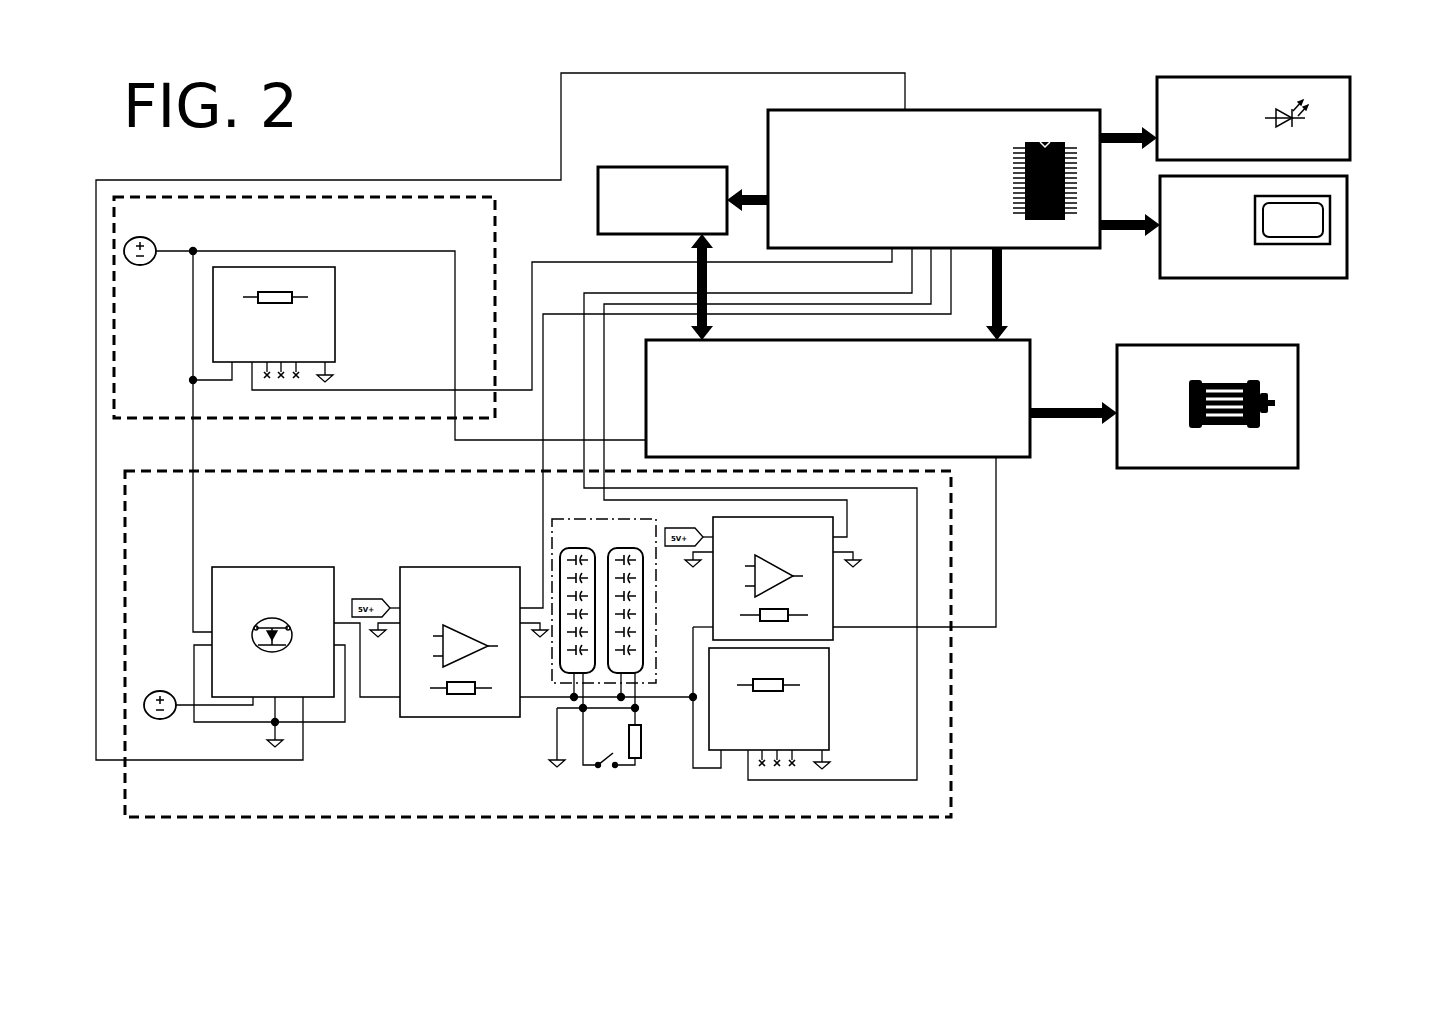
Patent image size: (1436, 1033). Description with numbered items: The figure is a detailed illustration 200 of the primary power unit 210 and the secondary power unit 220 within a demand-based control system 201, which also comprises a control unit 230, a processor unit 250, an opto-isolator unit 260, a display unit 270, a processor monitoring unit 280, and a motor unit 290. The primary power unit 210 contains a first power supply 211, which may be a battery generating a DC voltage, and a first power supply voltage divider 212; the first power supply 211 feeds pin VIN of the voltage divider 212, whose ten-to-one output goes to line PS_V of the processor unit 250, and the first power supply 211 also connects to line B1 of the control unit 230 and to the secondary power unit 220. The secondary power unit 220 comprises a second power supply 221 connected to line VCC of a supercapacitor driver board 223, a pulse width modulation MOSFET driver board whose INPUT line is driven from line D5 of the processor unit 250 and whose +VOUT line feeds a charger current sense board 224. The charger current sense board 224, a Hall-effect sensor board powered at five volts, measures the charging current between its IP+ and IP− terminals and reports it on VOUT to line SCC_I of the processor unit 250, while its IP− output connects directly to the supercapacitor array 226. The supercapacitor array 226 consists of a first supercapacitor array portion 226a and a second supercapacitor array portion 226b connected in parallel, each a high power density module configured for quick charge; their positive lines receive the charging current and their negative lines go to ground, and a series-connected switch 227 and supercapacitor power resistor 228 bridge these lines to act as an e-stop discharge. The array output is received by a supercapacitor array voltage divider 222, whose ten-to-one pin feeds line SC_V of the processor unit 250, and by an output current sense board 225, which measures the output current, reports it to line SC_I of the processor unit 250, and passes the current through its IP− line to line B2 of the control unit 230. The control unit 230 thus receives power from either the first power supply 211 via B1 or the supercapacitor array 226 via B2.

The illustration 200 is at (1381, 72).
The demand-based control system 201 is at (1208, 599).
The primary power unit 210 is at (503, 414).
The first power supply 211 is at (158, 267).
The first power supply voltage divider 212 is at (264, 324).
The secondary power unit 220 is at (538, 644).
The second power supply 221 is at (198, 718).
The supercapacitor array voltage divider 222 is at (769, 708).
The supercapacitor driver board 223 is at (297, 657).
The charger current sense board 224 is at (522, 642).
The output current sense board 225 is at (763, 578).
The supercapacitor array 226 is at (635, 630).
The first supercapacitor array portion 226a is at (574, 617).
The second supercapacitor array portion 226b is at (624, 626).
The switch 227 is at (609, 753).
The supercapacitor power resistor 228 is at (652, 741).
The control unit 230 is at (881, 491).
The processor unit 250 is at (840, 445).
The opto-isolator unit 260 is at (662, 253).
The display unit 270 is at (1253, 227).
The processor monitoring unit 280 is at (1253, 118).
The motor unit 290 is at (1207, 406).